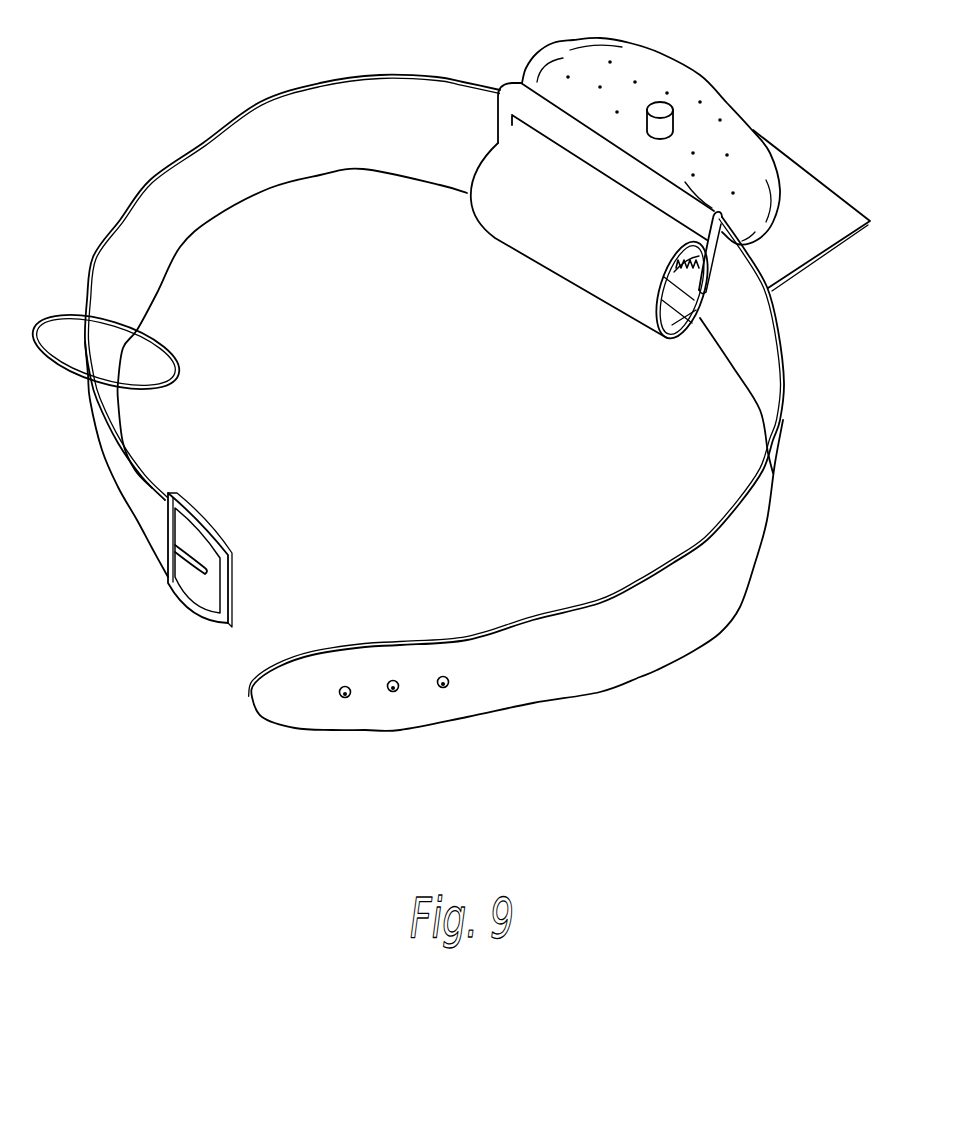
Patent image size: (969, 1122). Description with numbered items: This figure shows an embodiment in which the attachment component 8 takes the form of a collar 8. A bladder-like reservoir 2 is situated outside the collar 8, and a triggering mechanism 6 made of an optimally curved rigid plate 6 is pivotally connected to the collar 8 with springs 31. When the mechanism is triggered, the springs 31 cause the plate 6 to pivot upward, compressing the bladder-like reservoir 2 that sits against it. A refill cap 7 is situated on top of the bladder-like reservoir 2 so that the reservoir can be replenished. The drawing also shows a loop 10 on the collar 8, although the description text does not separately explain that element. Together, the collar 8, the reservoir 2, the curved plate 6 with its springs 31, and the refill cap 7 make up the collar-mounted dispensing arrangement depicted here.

The bladder-like reservoir 2 is at (726, 137).
The triggering mechanism 6 is at (563, 250).
The refill cap 7 is at (662, 112).
The collar 8 is at (720, 600).
The strap loop 10 is at (168, 342).
The springs 31 is at (693, 307).